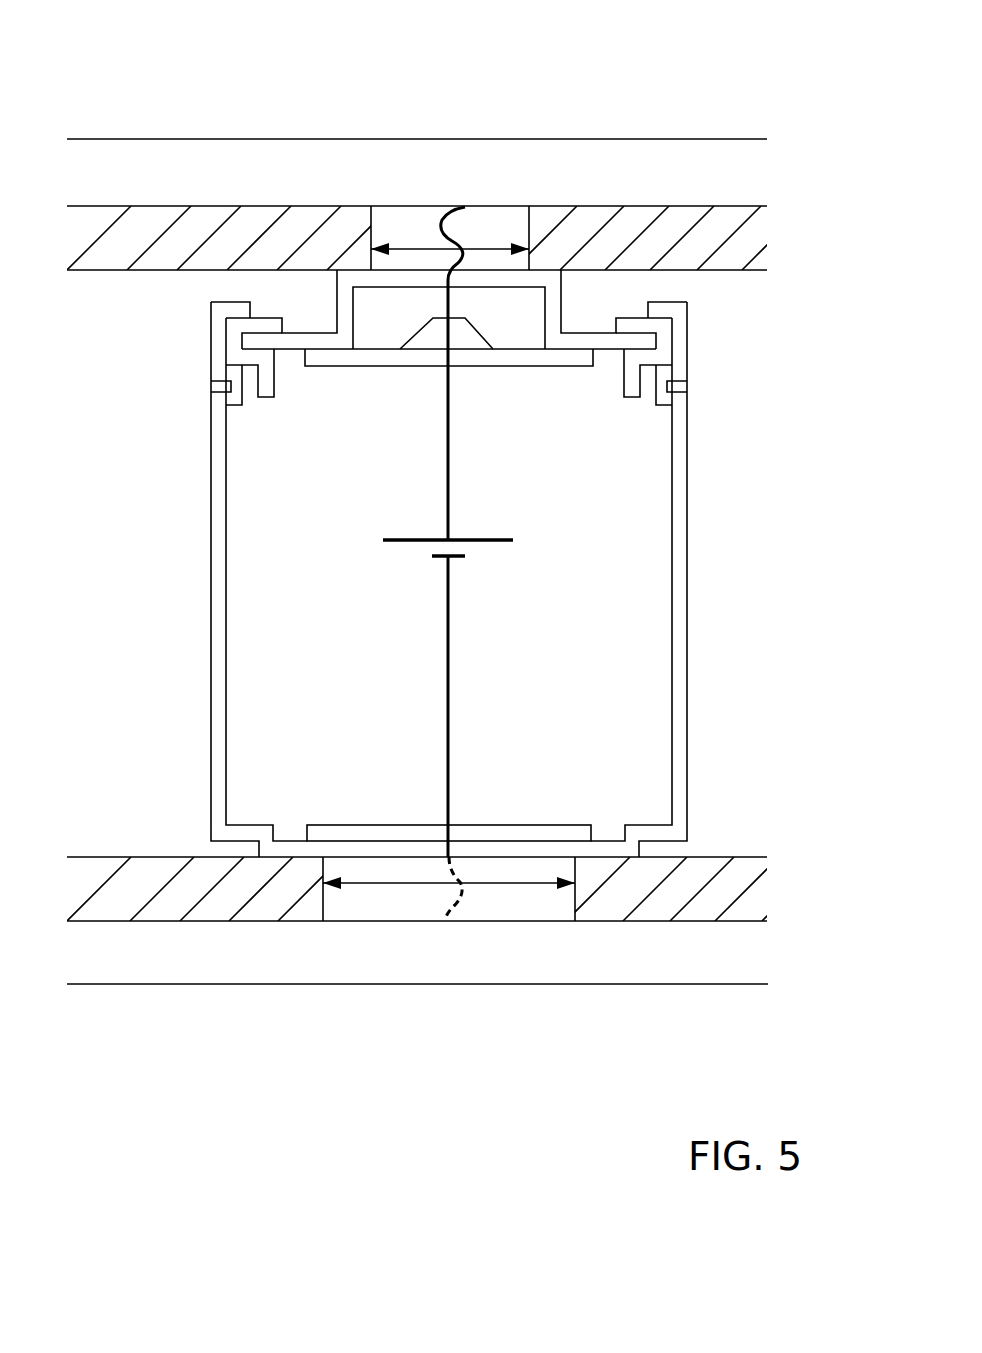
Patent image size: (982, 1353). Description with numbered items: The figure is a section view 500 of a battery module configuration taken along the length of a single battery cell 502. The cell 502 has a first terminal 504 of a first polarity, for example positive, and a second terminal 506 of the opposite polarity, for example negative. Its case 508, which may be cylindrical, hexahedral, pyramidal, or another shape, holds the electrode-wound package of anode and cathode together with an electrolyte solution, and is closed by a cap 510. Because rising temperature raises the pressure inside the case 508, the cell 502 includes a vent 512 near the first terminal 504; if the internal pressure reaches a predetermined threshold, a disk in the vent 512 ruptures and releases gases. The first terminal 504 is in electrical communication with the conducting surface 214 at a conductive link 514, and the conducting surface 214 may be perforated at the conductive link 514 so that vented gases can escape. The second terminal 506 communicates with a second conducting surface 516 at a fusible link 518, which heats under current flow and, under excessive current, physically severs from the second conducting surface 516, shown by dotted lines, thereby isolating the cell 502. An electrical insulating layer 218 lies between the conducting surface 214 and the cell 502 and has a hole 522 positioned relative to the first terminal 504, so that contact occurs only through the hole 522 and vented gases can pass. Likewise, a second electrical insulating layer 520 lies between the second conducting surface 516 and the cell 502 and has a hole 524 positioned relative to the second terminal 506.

The section view 500 is at (143, 77).
The battery cell 502 is at (730, 537).
The first terminal 504 is at (580, 370).
The second terminal 506 is at (377, 825).
The case 508 is at (210, 535).
The cap 510 is at (355, 315).
The vent 512 is at (483, 333).
The conductive link 514 is at (440, 218).
The second conducting surface 516 is at (198, 985).
The fusible link 518 is at (445, 918).
The second electrical insulating layer 520 is at (750, 856).
The hole 522 is at (493, 249).
The hole 524 is at (509, 883).
The conducting surface 214 is at (655, 139).
The electrical insulating layer 218 is at (157, 272).